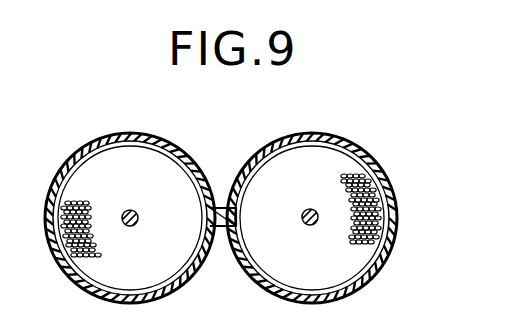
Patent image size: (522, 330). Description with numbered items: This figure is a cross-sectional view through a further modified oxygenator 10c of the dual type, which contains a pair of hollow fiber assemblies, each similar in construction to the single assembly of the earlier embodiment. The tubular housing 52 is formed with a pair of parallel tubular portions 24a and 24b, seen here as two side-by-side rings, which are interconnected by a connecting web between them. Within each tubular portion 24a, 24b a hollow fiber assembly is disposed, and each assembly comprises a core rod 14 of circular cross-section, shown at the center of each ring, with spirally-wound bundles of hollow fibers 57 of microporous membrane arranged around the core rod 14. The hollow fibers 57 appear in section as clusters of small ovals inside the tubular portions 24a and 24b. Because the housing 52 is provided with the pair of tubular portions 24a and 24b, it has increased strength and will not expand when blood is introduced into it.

The oxygenator 10c is at (250, 194).
The tubular portion 24a is at (397, 209).
The tubular portion 24b is at (173, 114).
The tubular housing 52 is at (249, 160).
The core rod 14 is at (138, 212).
The hollow fibers 57 is at (76, 207).